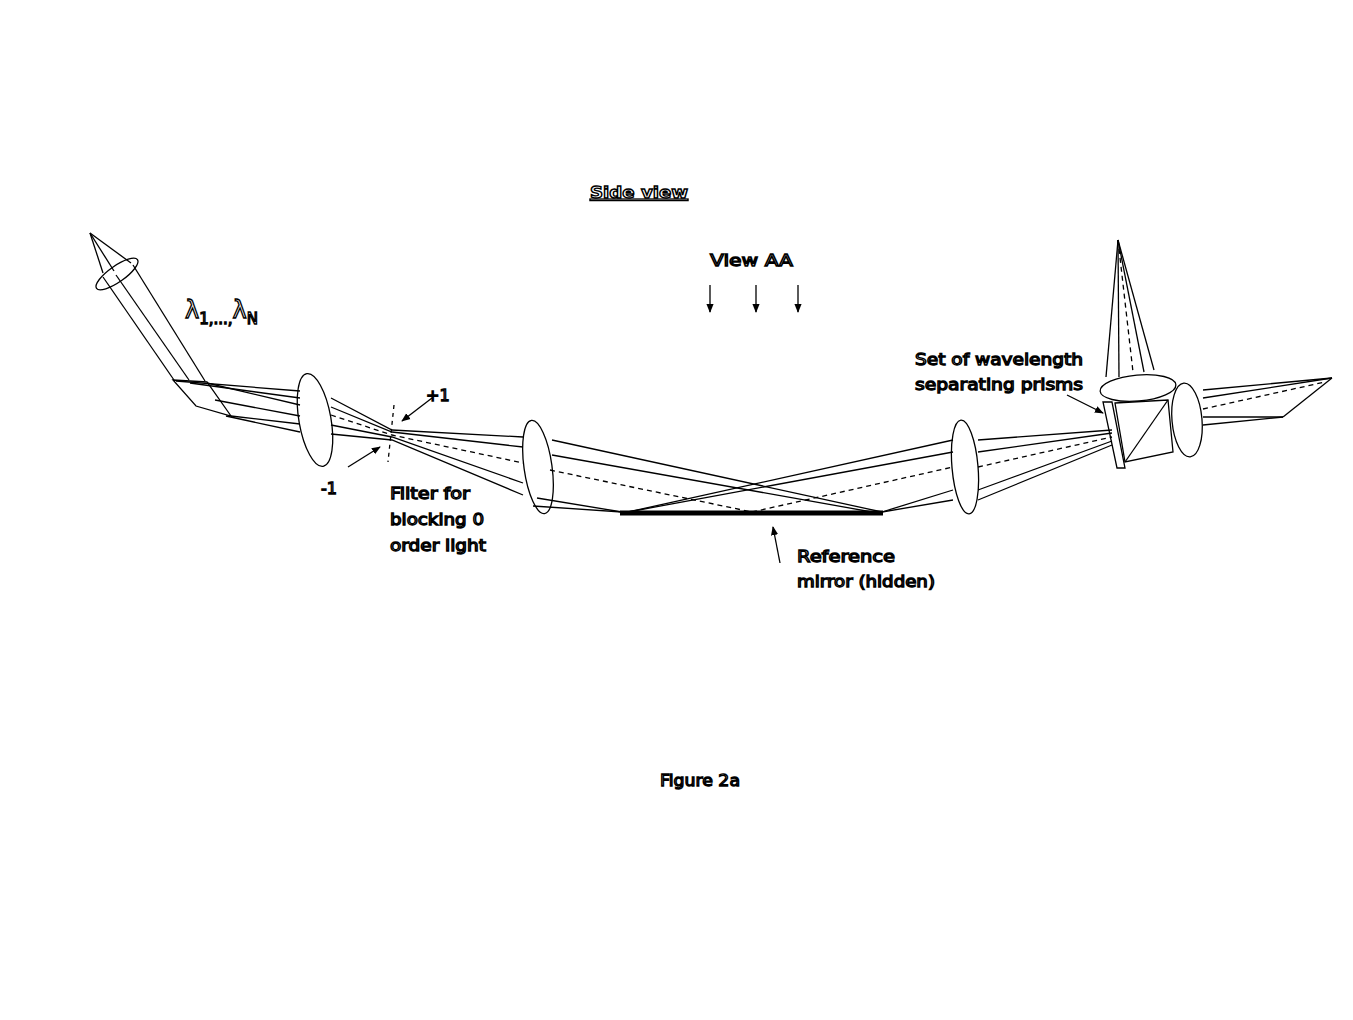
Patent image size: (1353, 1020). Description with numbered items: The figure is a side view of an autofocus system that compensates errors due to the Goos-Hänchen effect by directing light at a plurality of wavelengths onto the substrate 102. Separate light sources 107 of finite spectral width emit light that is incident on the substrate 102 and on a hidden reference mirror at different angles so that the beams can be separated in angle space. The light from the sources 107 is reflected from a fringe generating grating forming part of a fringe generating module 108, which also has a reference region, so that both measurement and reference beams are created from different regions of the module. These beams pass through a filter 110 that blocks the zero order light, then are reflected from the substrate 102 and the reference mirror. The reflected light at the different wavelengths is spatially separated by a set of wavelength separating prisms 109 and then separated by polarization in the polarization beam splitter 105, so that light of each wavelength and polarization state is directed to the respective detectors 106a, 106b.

The light sources 107 is at (143, 290).
The fringe generating module 108 is at (167, 487).
The filter 110 is at (384, 420).
The substrate 102 is at (749, 534).
The polarization beam splitter 105 is at (1135, 473).
The prisms 109 is at (1112, 457).
The detector 106a is at (1285, 430).
The detector 106b is at (1065, 305).